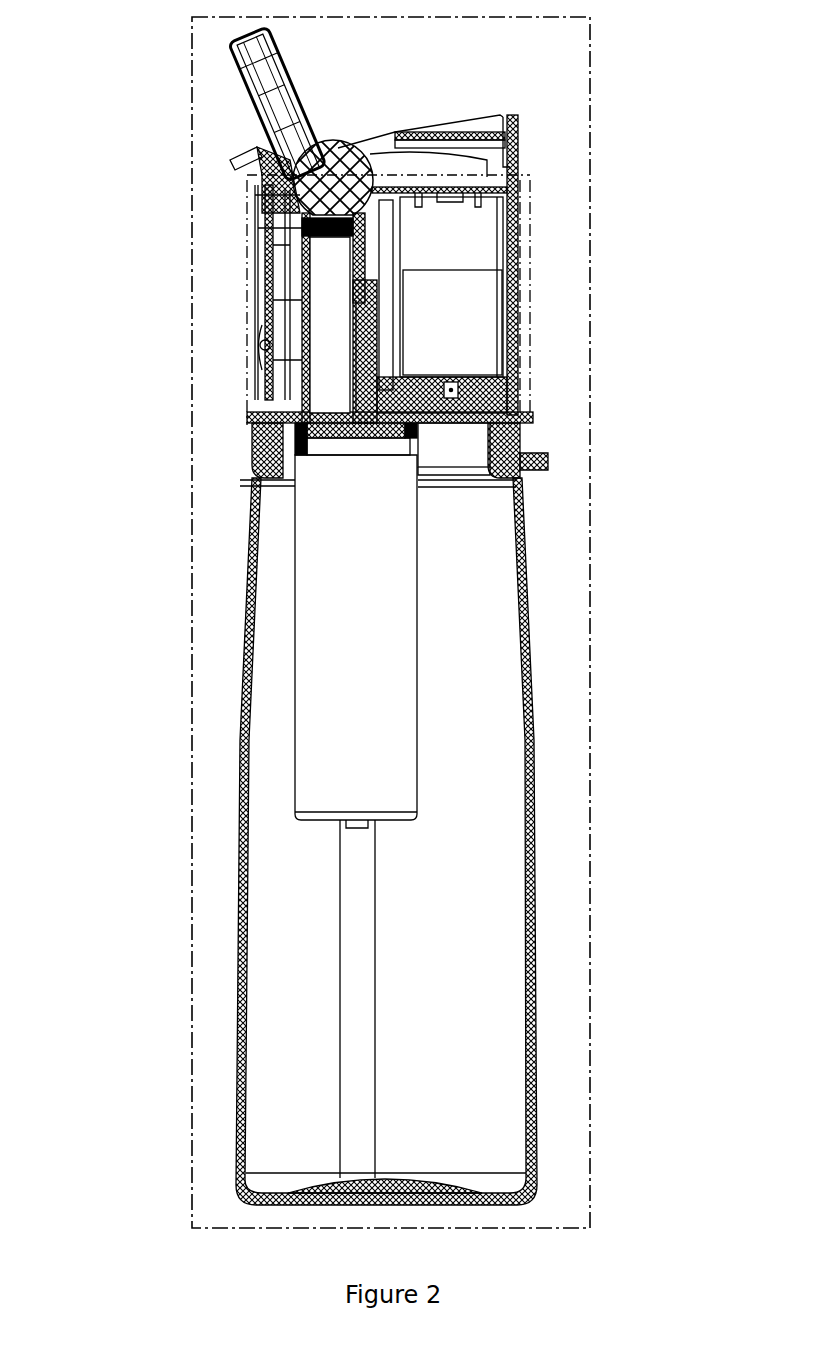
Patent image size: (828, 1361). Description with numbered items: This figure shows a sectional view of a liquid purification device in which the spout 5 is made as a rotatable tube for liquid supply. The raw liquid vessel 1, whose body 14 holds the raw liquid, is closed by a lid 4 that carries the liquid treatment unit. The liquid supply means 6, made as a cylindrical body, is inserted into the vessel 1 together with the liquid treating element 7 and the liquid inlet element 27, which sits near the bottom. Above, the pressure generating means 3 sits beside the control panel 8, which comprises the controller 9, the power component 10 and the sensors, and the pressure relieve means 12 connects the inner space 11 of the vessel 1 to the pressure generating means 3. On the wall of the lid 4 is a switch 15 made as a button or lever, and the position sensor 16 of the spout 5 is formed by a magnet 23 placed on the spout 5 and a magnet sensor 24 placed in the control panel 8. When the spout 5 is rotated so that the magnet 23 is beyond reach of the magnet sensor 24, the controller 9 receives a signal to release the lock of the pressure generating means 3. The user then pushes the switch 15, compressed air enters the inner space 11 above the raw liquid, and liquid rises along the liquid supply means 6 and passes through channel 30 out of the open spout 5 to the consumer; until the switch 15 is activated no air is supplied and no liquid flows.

The raw liquid vessel 1 is at (192, 652).
The pressure generating means 3 is at (455, 298).
The lid 4 is at (520, 142).
The spout 5 is at (237, 60).
The liquid supply means 6 is at (360, 960).
The liquid treating element 7 is at (345, 495).
The control panel 8 is at (535, 317).
The controller 9 is at (287, 313).
The power component 10 is at (385, 250).
The inner space 11 is at (478, 770).
The pressure relieve means 12 is at (450, 391).
The body 14 is at (530, 945).
The switch 15 is at (263, 335).
The position sensor 16 is at (288, 225).
The magnet 23 is at (233, 167).
The magnet sensor 24 is at (250, 203).
The liquid inlet element 27 is at (365, 1172).
The channel 30 is at (333, 261).